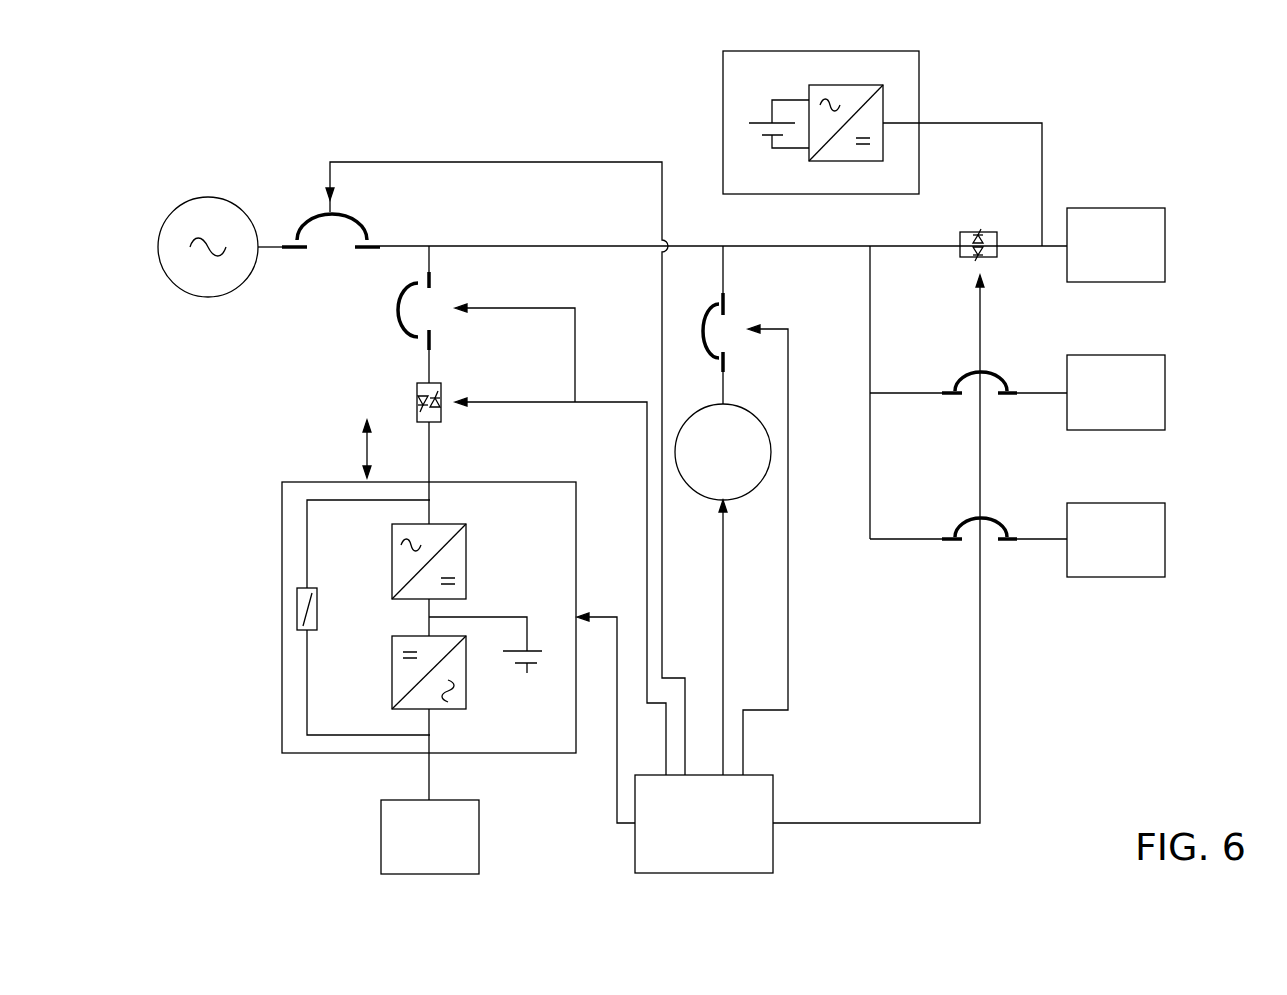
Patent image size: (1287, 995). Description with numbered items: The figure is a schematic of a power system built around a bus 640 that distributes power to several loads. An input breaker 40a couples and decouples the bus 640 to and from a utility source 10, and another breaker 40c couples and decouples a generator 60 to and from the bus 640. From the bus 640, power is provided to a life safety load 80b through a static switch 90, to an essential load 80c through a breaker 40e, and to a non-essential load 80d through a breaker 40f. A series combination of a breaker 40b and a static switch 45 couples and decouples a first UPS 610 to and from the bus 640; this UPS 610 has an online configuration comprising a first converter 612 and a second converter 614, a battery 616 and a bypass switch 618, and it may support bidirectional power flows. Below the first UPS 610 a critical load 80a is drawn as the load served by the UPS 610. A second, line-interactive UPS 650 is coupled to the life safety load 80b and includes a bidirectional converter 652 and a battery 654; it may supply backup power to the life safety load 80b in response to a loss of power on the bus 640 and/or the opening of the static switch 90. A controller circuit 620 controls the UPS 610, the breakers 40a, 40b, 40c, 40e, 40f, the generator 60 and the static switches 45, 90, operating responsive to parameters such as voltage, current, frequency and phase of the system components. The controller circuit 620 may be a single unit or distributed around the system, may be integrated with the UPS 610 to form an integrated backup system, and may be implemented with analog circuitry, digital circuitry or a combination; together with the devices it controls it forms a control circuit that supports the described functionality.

The utility source 10 is at (208, 295).
The input breaker 40a is at (304, 204).
The breaker 40b is at (366, 307).
The breaker 40c is at (758, 296).
The breaker 40e is at (942, 361).
The breaker 40f is at (947, 503).
The static switch 45 is at (384, 383).
The generator 60 is at (773, 452).
The critical load 80a is at (482, 833).
The life safety load 80b is at (1117, 207).
The essential load 80c is at (1117, 355).
The non-essential load 80d is at (1117, 503).
The static switch 90 is at (935, 221).
The UPS 610 is at (429, 622).
The first converter 612 is at (466, 559).
The second converter 614 is at (392, 675).
The battery 616 is at (504, 700).
The bypass switch 618 is at (317, 603).
The controller circuit 620 is at (705, 873).
The bus 640 is at (633, 244).
The second, line-interactive UPS 650 is at (849, 148).
The bidirectional converter 652 is at (848, 162).
The battery 654 is at (794, 83).